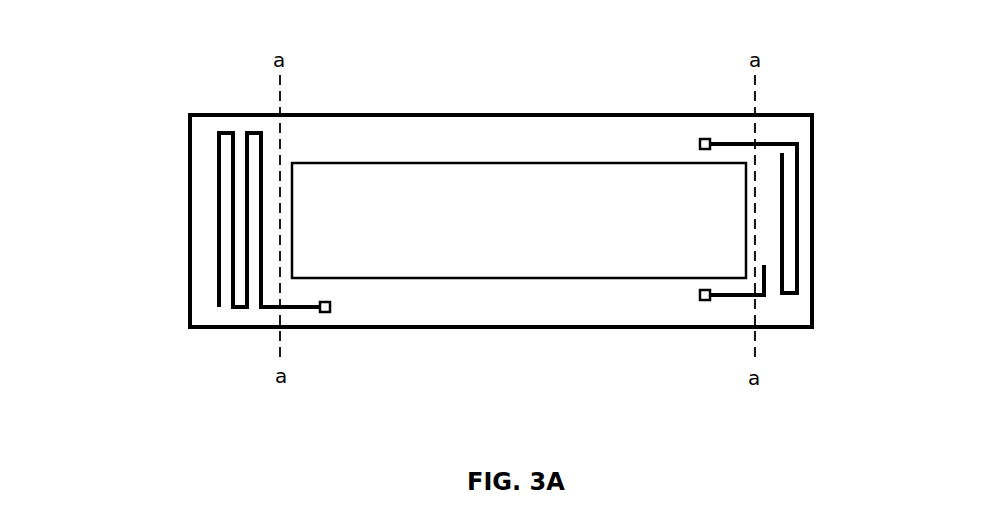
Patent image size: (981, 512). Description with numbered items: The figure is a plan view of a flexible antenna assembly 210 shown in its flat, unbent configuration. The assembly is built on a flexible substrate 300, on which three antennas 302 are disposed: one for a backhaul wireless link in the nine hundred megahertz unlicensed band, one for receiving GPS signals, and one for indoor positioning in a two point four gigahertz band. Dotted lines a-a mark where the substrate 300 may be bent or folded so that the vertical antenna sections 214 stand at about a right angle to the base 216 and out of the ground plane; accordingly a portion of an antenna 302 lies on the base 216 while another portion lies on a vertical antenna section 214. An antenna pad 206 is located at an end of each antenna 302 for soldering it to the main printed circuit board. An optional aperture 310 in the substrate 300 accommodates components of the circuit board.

The flexible antenna assembly 210 is at (173, 101).
The vertical antenna section 214 is at (248, 114).
The base 216 is at (510, 328).
The flexible substrate 300 is at (437, 129).
The aperture 310 is at (572, 162).
The antenna 302 is at (218, 172).
The antenna pad 206 is at (700, 140).